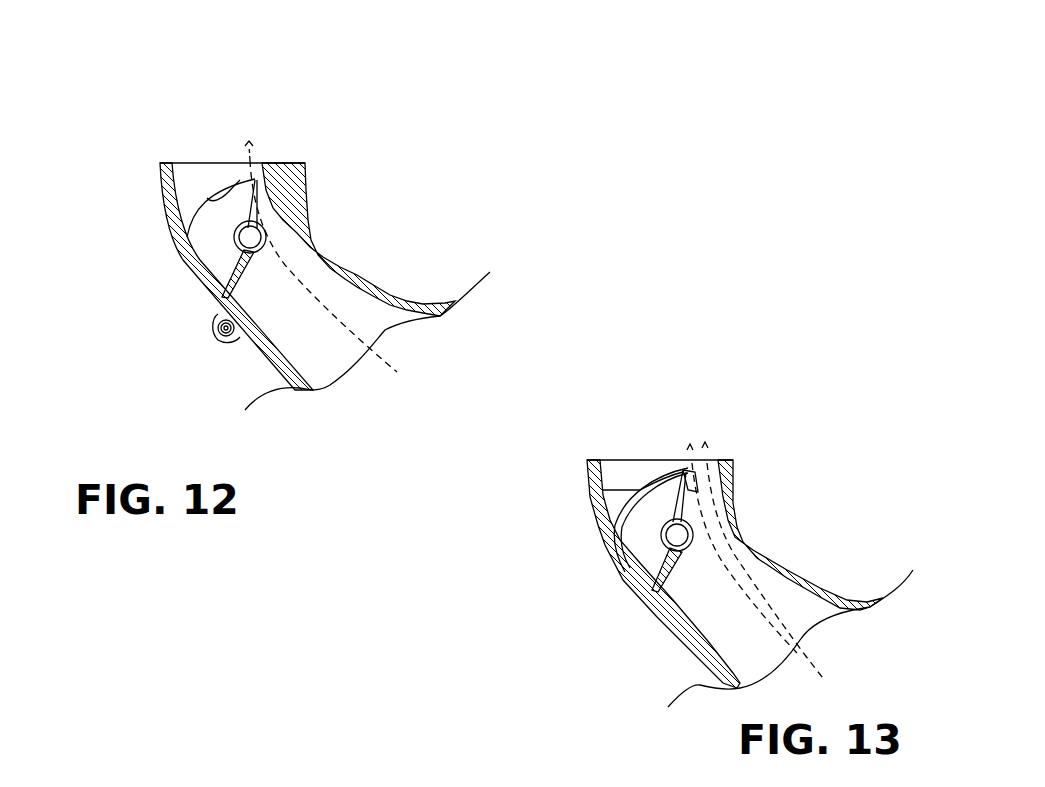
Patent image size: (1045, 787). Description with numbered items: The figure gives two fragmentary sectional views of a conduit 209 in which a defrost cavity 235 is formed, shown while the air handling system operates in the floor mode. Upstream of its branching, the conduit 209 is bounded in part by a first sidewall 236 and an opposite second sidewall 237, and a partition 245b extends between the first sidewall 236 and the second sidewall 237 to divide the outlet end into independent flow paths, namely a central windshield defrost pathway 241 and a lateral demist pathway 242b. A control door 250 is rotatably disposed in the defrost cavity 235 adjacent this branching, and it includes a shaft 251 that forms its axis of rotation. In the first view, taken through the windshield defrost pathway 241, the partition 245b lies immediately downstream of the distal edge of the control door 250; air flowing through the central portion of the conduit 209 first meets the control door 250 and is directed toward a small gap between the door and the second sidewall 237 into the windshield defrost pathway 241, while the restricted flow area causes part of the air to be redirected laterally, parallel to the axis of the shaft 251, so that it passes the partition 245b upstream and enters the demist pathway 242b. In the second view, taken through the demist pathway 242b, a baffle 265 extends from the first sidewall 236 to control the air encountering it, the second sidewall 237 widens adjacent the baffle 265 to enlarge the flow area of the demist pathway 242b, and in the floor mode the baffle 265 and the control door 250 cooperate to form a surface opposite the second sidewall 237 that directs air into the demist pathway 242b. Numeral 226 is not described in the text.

In FIG. 12, the conduit 209 is at (207, 197).
In FIG. 13, the conduit 209 is at (631, 482).
In FIG. 12, the defrost cavity 235 is at (291, 337).
In FIG. 12, the first sidewall 236 is at (226, 298).
In FIG. 13, the first sidewall 236 is at (657, 607).
In FIG. 12, the second sidewall 237 is at (340, 254).
In FIG. 13, the second sidewall 237 is at (758, 552).
In FIG. 12, the windshield defrost pathway 241 is at (185, 188).
In FIG. 13, the demist pathway 242b is at (719, 491).
In FIG. 12, the partition 245b is at (250, 178).
In FIG. 12, the control door 250 is at (219, 230).
In FIG. 13, the control door 250 is at (651, 548).
In FIG. 12, the shaft 251 is at (243, 262).
In FIG. 13, the baffle 265 is at (605, 497).
In FIG. 13, the base 226 is at (419, 782).